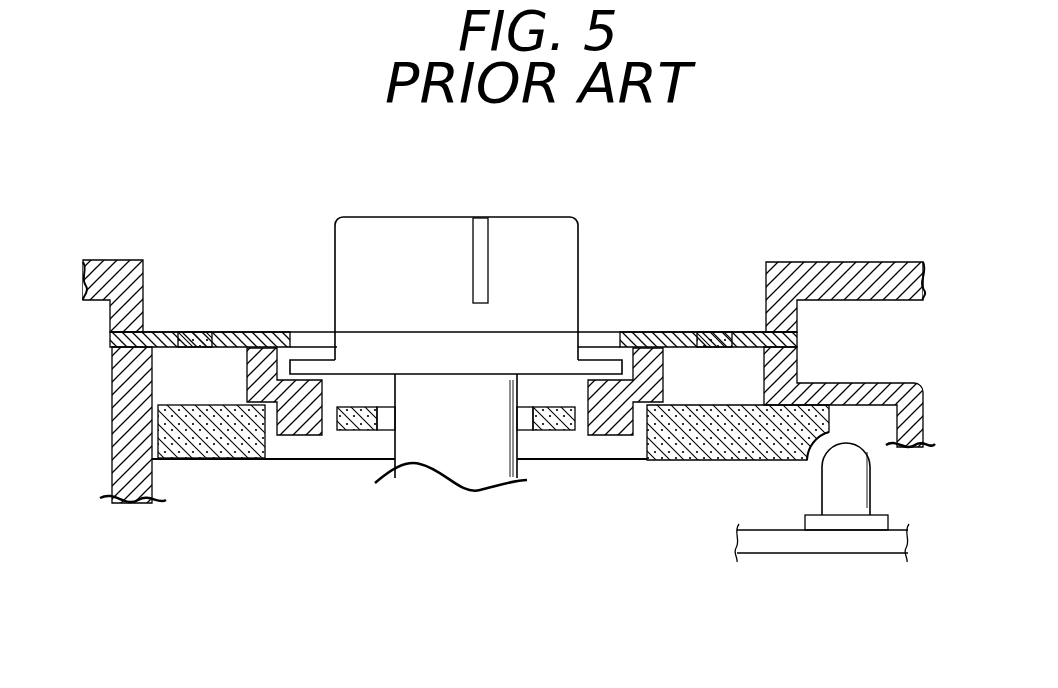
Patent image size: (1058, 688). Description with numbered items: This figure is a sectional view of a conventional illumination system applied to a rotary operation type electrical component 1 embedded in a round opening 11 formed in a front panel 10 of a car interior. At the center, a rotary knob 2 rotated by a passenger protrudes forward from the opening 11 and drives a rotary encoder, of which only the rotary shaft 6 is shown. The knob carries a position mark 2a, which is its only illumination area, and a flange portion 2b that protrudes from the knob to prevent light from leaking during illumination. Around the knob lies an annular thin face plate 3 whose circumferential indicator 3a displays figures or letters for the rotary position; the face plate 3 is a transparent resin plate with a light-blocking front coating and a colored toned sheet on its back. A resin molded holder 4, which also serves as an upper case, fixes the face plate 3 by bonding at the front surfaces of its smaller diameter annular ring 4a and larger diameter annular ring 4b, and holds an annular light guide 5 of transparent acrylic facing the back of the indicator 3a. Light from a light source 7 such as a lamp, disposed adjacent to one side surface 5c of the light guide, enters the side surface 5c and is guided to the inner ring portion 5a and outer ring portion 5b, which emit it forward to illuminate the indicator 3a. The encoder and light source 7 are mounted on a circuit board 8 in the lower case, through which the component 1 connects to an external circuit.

The rotary operation type electrical component 1 is at (287, 221).
The rotary knob 2 is at (402, 216).
The position mark 2a is at (483, 218).
The flange portion 2b is at (303, 367).
The face plate 3 is at (640, 332).
The indicator 3a is at (203, 332).
The holder 4 is at (288, 565).
The smaller diameter annular ring 4a is at (290, 428).
The larger diameter annular ring 4b is at (155, 472).
The annular light guide 5 is at (653, 540).
The inner ring portion 5a is at (553, 430).
The outer ring portion 5b is at (680, 452).
The side surface 5c is at (815, 448).
The rotary shaft 6 is at (442, 465).
The light source 7 is at (860, 488).
The circuit board 8 is at (792, 545).
The front panel 10 is at (867, 262).
The opening 11 is at (768, 272).